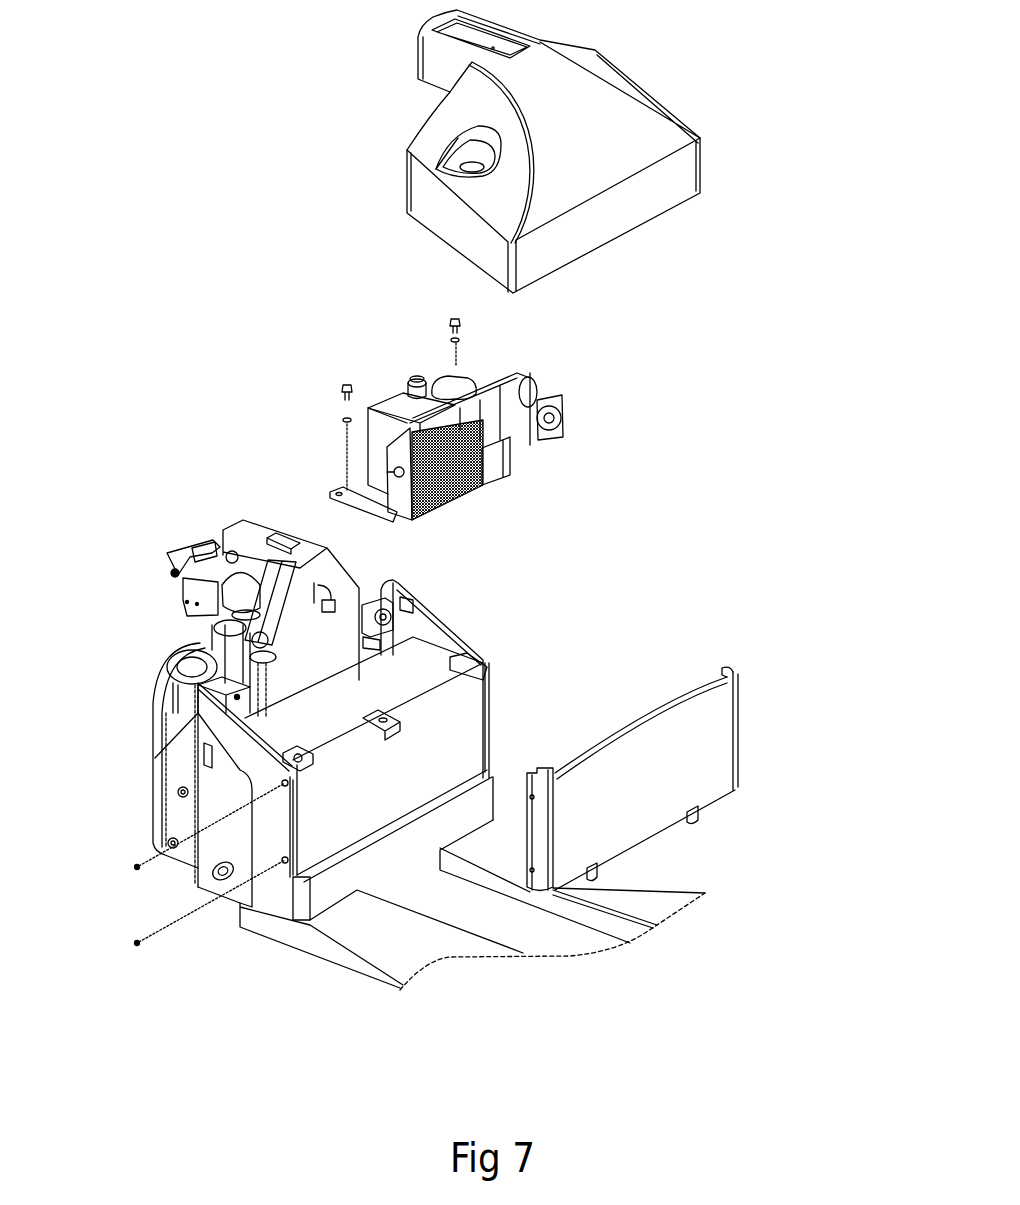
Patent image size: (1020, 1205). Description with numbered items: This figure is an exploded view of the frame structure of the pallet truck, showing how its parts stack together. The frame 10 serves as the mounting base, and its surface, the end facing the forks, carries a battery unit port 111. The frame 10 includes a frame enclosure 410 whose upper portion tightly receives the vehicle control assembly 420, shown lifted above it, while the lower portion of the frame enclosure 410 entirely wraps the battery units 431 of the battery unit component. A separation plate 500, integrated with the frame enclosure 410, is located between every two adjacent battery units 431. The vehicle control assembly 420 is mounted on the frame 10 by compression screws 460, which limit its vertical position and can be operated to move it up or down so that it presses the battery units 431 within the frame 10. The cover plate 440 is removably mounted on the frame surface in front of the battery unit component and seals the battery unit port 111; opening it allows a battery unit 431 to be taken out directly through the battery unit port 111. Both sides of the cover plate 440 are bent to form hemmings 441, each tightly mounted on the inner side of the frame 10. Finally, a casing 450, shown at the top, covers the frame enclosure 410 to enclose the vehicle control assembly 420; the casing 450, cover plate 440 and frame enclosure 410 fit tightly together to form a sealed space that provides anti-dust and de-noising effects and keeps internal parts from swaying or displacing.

The frame 10 is at (203, 801).
The battery unit port 111 is at (483, 698).
The frame enclosure 410 is at (195, 887).
The vehicle control assembly 420 is at (543, 387).
The battery unit 431 is at (433, 658).
The cover plate 440 is at (718, 752).
The hemming 441 is at (725, 672).
The casing 450 is at (615, 128).
The compression screw 460 is at (450, 330).
The separation plate 500 is at (397, 783).